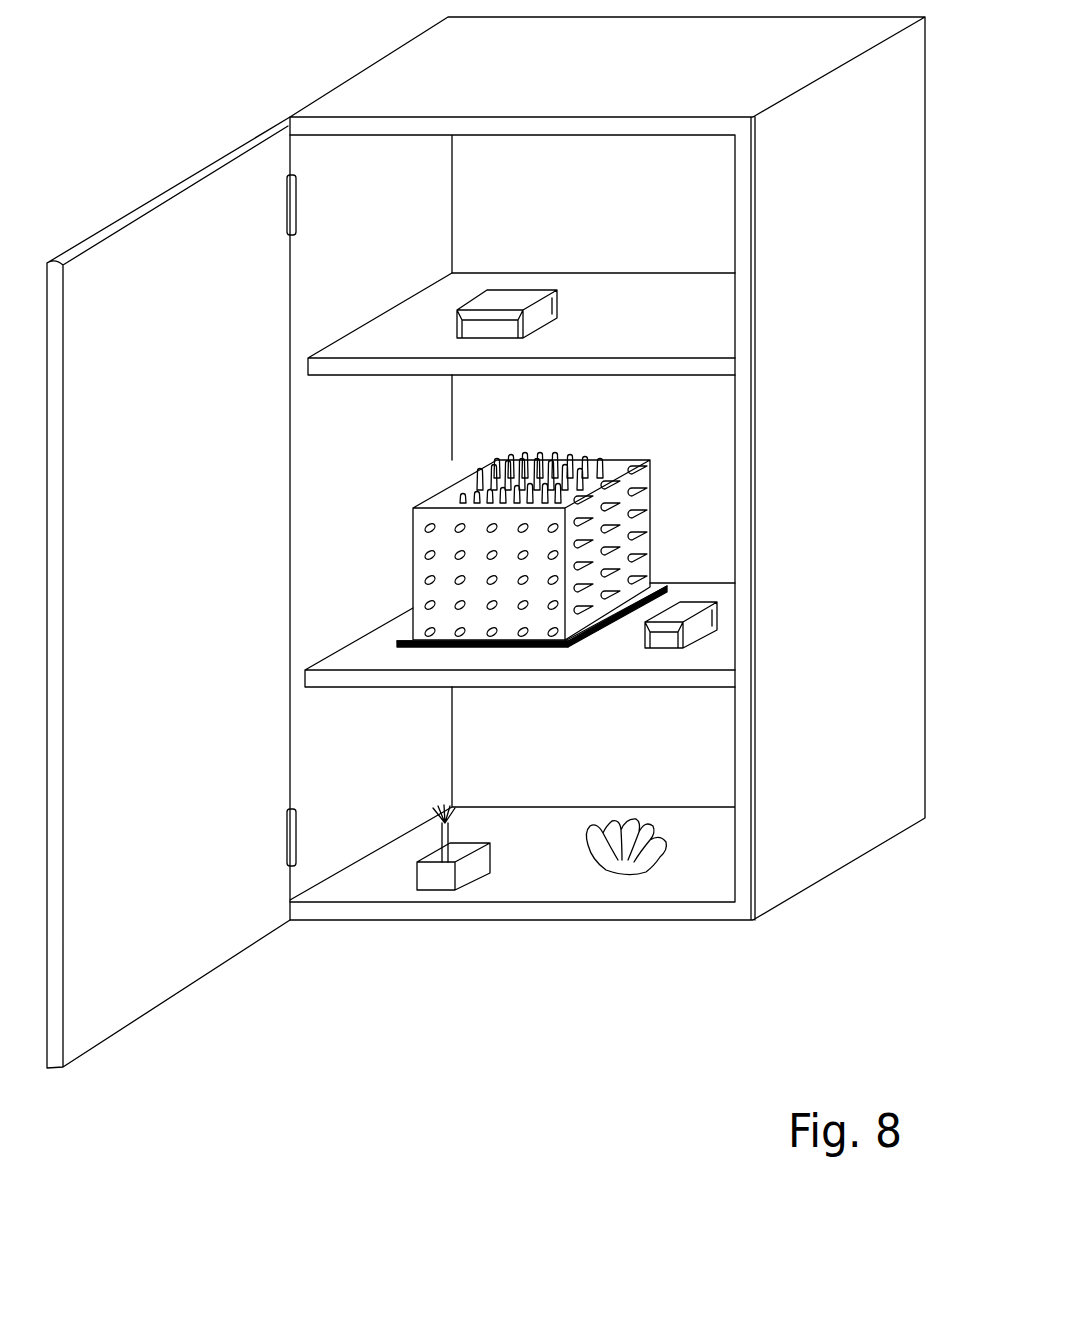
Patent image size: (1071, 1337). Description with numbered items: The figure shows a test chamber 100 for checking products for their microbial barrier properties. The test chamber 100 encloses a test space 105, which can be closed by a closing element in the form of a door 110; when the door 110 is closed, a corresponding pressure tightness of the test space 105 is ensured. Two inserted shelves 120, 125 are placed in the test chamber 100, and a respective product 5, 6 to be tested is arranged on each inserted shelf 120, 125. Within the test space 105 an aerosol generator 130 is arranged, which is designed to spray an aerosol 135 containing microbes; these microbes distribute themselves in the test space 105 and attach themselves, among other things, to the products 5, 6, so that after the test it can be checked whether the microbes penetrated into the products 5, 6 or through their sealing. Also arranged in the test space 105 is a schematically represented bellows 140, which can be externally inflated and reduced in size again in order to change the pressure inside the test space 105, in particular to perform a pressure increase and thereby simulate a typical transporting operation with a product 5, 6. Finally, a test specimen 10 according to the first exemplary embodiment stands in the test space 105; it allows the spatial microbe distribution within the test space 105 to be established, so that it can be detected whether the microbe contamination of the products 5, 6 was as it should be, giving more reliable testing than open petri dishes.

The test chamber 100 is at (850, 905).
The test space 105 is at (696, 412).
The door 110 is at (172, 948).
The inserted shelf 120 is at (703, 658).
The inserted shelf 125 is at (624, 300).
The aerosol generator 130 is at (438, 883).
The aerosol 135 is at (440, 818).
The bellows 140 is at (618, 863).
The test specimen 10 is at (422, 470).
The product 5 is at (677, 610).
The product 6 is at (508, 300).